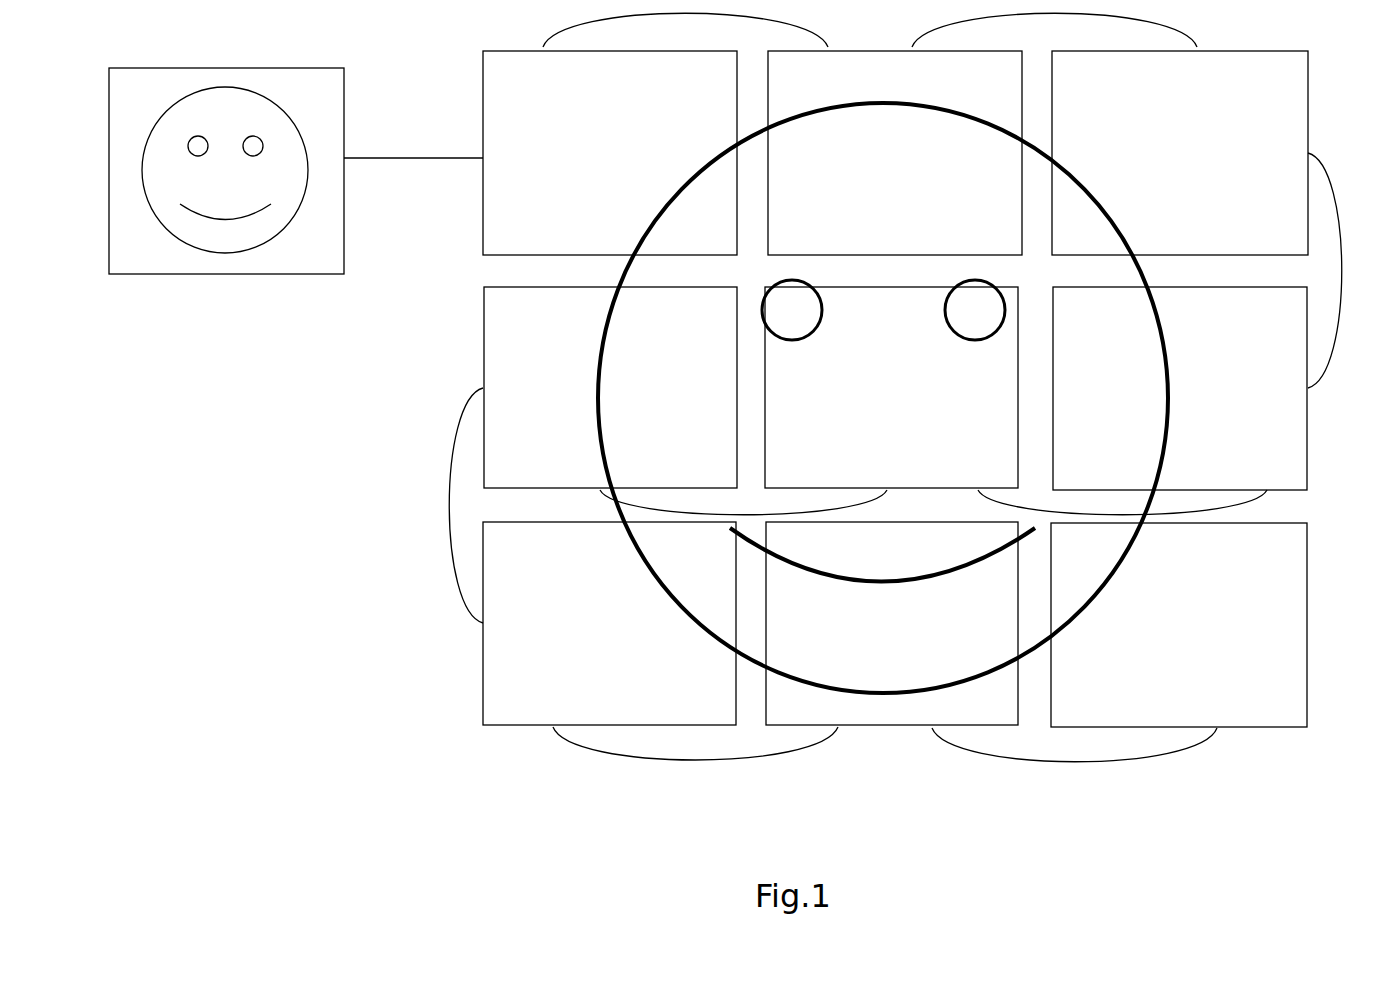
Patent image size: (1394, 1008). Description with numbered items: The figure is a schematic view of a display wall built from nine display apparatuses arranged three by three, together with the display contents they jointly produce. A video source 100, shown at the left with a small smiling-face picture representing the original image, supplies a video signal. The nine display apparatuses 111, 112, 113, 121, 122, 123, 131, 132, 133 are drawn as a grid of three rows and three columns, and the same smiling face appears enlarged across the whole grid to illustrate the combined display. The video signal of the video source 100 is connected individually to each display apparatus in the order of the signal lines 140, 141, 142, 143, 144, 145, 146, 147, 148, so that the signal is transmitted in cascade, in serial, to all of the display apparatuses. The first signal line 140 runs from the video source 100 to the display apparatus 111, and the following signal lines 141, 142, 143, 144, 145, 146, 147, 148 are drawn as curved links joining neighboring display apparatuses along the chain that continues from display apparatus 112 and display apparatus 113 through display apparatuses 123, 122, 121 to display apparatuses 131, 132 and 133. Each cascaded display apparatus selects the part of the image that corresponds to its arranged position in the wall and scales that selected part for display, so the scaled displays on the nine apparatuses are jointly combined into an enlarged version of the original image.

The video source 100 is at (188, 68).
The signal line 140 is at (413, 143).
The display apparatus 111 is at (610, 153).
The display apparatus 112 is at (895, 153).
The display apparatus 113 is at (1180, 153).
The display apparatus 121 is at (610, 387).
The display apparatus 122 is at (891, 387).
The display apparatus 123 is at (1180, 388).
The display apparatus 131 is at (609, 623).
The display apparatus 132 is at (892, 623).
The display apparatus 133 is at (1179, 625).
The signal line 141 is at (685, 27).
The signal line 142 is at (1054, 34).
The signal line 143 is at (1344, 270).
The signal line 144 is at (1122, 509).
The signal line 145 is at (743, 501).
The signal line 146 is at (443, 505).
The signal line 147 is at (695, 758).
The signal line 148 is at (1074, 765).